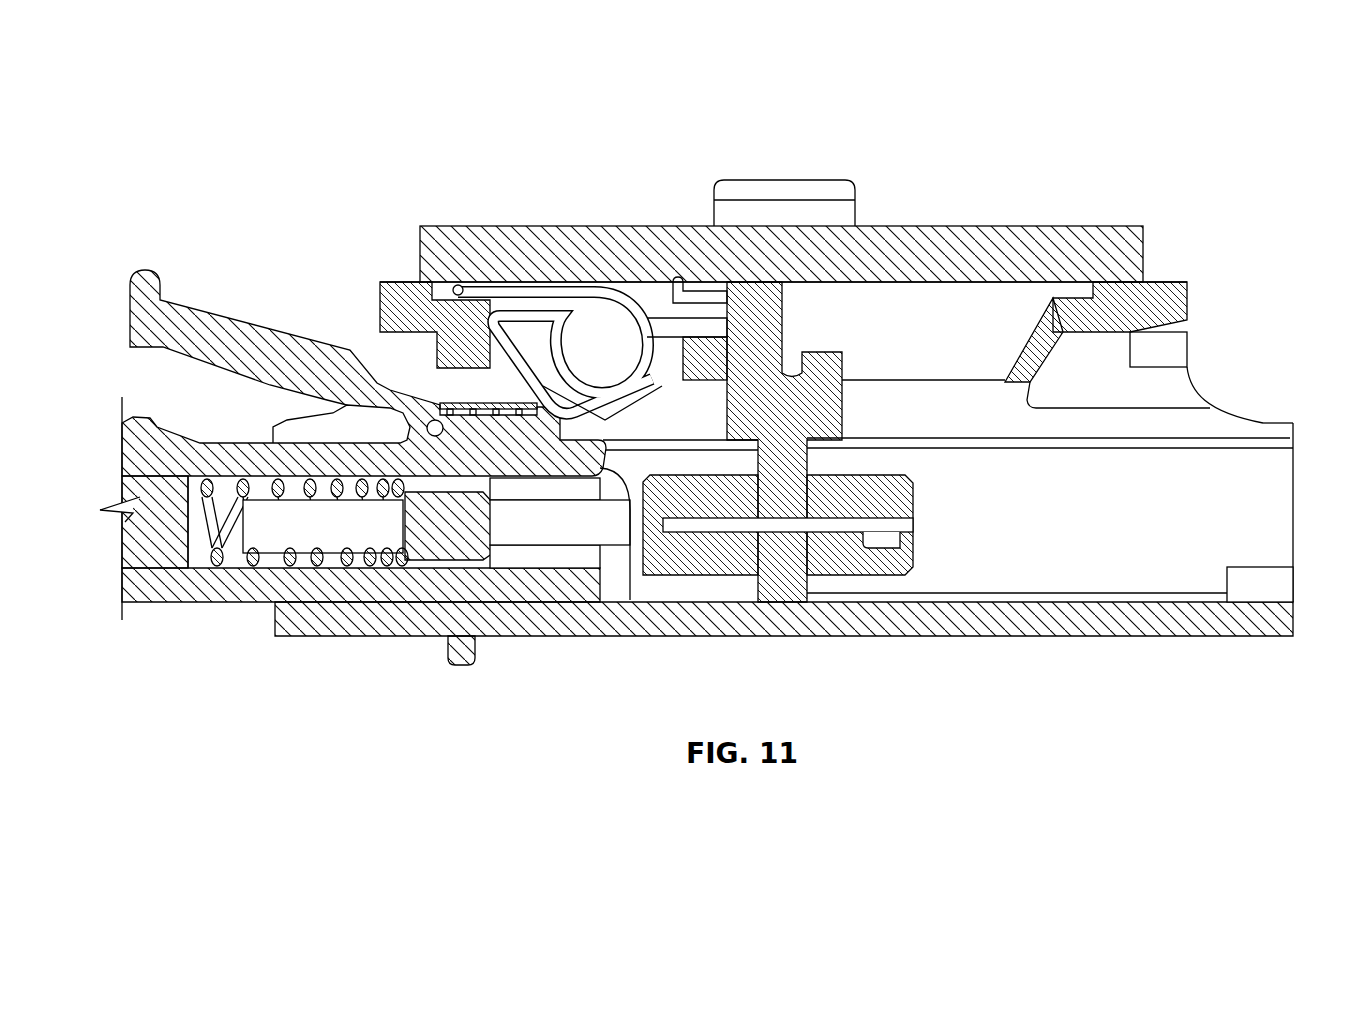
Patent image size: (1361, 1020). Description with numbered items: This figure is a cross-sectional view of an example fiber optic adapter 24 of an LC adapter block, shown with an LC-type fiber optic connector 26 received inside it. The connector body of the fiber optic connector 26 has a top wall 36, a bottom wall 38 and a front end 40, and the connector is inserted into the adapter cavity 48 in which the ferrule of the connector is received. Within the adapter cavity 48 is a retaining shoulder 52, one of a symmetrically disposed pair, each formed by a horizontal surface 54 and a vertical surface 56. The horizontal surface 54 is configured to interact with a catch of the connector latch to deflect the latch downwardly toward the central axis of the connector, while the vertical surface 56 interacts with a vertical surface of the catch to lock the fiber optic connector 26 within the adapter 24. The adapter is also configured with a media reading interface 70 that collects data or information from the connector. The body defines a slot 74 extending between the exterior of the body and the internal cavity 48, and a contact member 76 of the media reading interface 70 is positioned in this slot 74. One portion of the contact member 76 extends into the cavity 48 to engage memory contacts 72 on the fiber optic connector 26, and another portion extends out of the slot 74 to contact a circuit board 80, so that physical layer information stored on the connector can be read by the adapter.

The fiber optic adapter 24 is at (1116, 638).
The fiber optic connector 26 is at (198, 603).
The top wall 36 is at (200, 443).
The bottom wall 38 is at (162, 603).
The front end 40 is at (630, 600).
The adapter cavity 48 is at (1165, 281).
The retaining shoulder 52 is at (1170, 345).
The horizontal surface 54 is at (1162, 368).
The vertical surface 56 is at (1128, 355).
The media reading interface 70 is at (636, 302).
The memory contacts 72 is at (455, 402).
The slot 74 is at (1025, 340).
The contact member 76 is at (537, 277).
The circuit board 80 is at (933, 225).